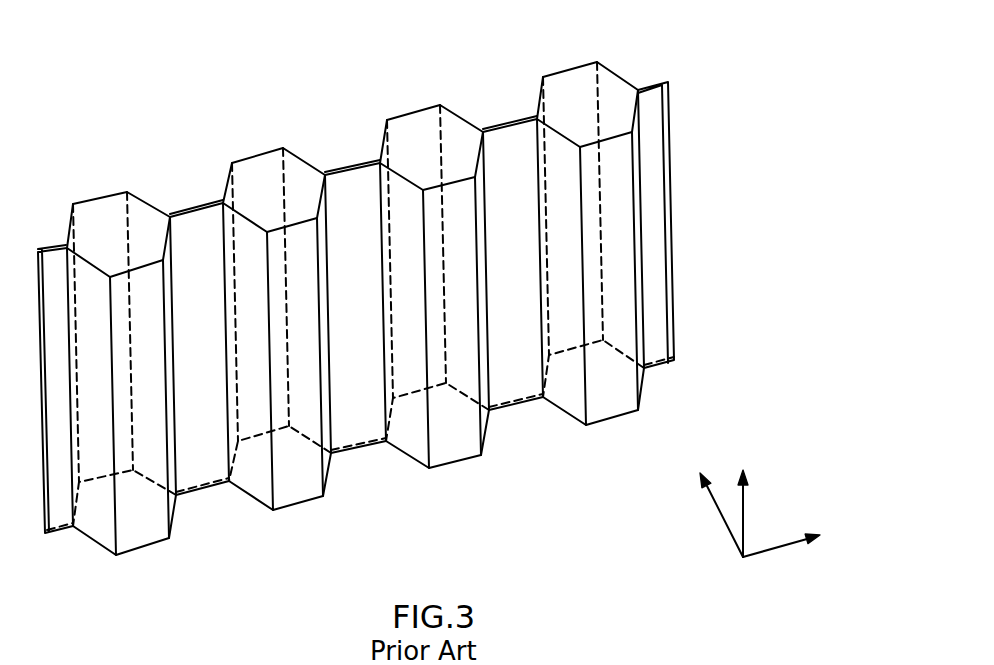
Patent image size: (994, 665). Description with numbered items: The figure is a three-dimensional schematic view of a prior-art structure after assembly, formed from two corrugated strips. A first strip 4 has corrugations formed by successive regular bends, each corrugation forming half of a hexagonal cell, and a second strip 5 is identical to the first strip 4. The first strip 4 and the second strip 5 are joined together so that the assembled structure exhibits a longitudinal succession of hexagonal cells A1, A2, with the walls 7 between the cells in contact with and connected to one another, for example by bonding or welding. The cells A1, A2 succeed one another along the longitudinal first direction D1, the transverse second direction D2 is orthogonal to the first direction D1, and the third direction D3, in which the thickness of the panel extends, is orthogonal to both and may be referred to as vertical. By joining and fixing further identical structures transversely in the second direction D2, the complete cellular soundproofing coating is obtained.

The first strip 4 is at (287, 313).
The second strip 5 is at (290, 472).
The walls 7 is at (510, 383).
The hexagonal cell A1 is at (612, 102).
The hexagonal cell A2 is at (423, 142).
The first direction D1 is at (808, 534).
The second direction D2 is at (697, 506).
The third direction D3 is at (770, 507).